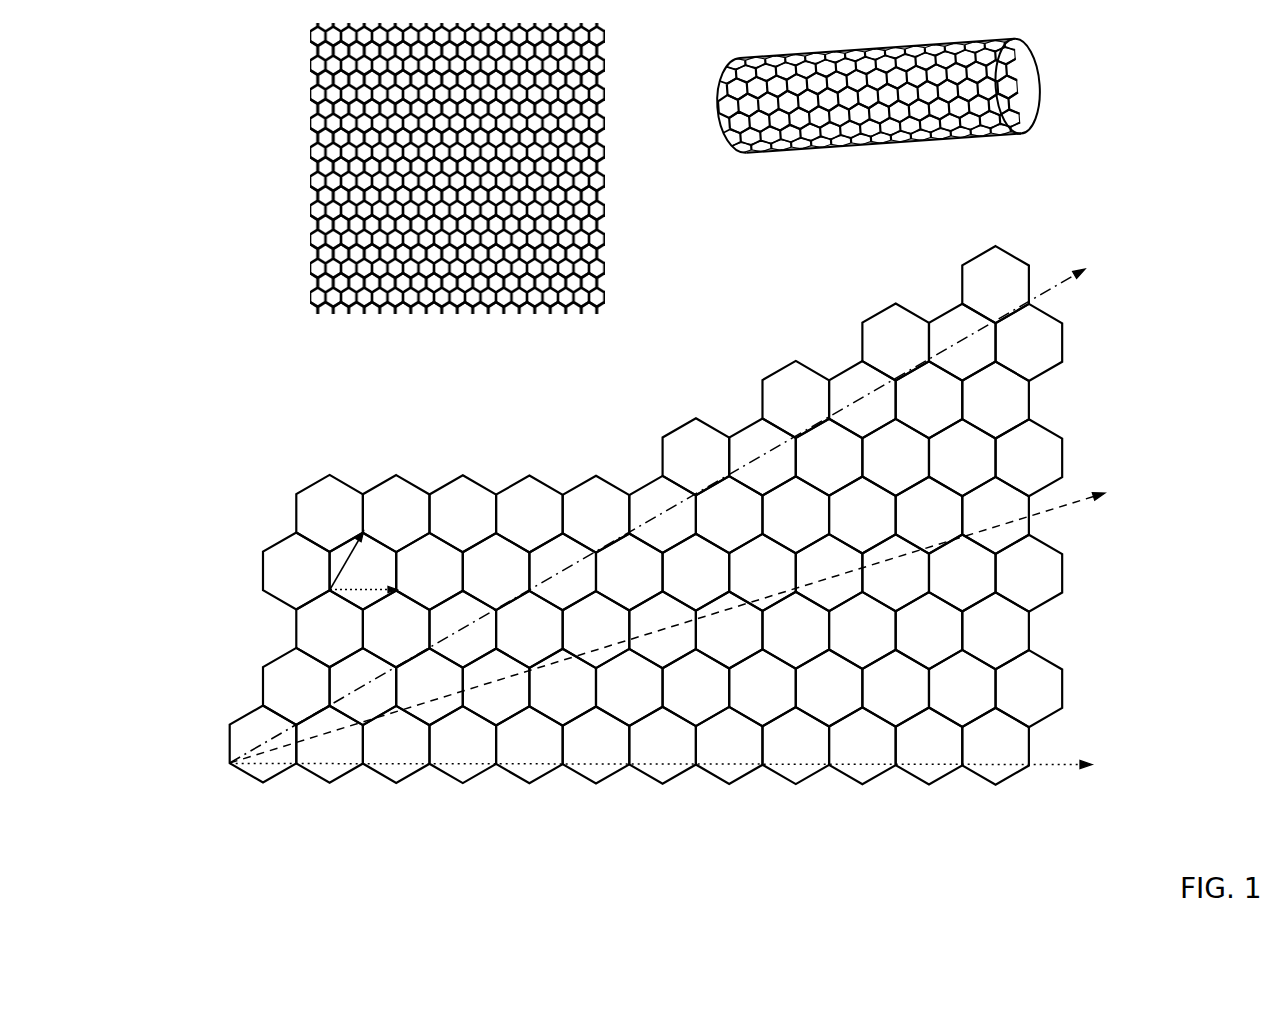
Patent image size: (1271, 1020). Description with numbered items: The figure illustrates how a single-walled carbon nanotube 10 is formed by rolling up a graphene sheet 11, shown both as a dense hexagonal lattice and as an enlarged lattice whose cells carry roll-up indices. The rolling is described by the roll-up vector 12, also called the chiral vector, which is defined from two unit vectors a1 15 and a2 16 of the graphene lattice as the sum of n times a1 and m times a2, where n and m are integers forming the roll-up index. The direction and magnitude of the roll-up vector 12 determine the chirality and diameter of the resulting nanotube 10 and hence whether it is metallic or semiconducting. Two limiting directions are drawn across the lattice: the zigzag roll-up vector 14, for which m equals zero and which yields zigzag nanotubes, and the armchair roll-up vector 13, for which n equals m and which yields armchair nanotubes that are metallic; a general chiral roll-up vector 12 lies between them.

The single-walled carbon nanotube 10 is at (1045, 77).
The graphene sheet 11 is at (308, 101).
The roll-up vector 12 is at (1060, 518).
The armchair roll-up vector 13 is at (1047, 290).
The zigzag roll-up vector 14 is at (1057, 778).
The unit vector a1 15 is at (377, 584).
The unit vector a2 16 is at (343, 557).